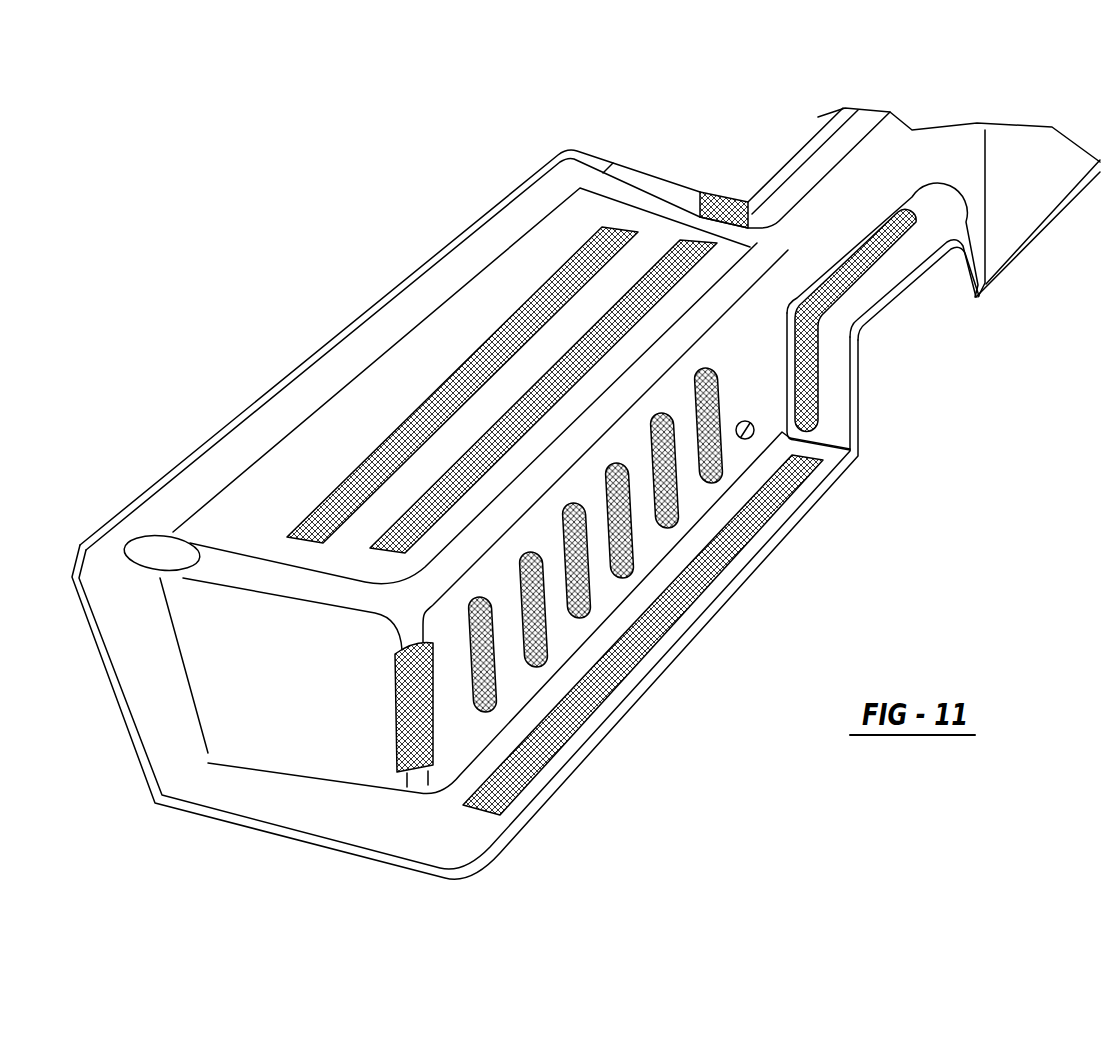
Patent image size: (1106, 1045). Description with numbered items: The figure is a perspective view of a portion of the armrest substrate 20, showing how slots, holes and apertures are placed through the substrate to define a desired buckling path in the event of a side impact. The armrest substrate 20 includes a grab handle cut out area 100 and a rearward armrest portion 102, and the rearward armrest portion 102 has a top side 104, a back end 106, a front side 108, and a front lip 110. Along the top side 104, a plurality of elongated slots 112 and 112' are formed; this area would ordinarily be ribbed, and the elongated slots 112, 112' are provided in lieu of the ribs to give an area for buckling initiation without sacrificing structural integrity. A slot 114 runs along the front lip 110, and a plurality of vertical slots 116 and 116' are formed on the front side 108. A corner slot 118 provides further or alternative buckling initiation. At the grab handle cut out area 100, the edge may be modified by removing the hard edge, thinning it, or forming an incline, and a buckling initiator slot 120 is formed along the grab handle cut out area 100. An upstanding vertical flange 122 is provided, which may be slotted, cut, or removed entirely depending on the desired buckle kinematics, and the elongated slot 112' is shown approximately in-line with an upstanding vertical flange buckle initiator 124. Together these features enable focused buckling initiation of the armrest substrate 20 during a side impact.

The armrest substrate 20 is at (230, 405).
The grab handle cut out area 100 is at (780, 168).
The rearward armrest portion 102 is at (370, 400).
The top side 104 is at (450, 330).
The back end 106 is at (238, 666).
The front side 108 is at (750, 383).
The front lip 110 is at (480, 835).
The elongated slot 112 is at (462, 341).
The elongated slot 112' is at (543, 331).
The slot 114 is at (705, 576).
The vertical slot 116 is at (570, 691).
The vertical slot 116' is at (630, 632).
The corner slot 118 is at (393, 740).
The buckling initiator slot 120 is at (953, 293).
The upstanding vertical flange 122 is at (833, 150).
The upstanding vertical flange buckle initiator 124 is at (717, 197).